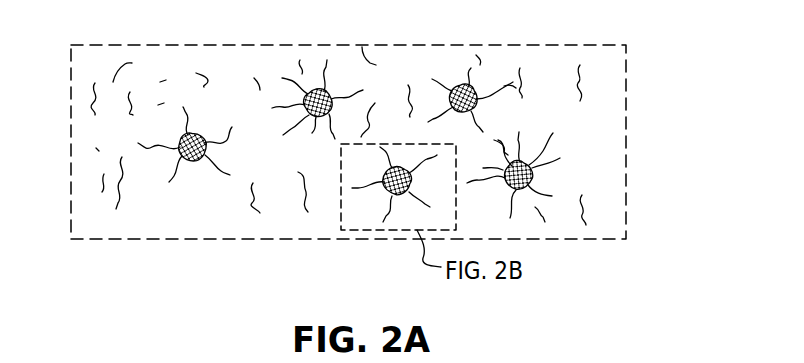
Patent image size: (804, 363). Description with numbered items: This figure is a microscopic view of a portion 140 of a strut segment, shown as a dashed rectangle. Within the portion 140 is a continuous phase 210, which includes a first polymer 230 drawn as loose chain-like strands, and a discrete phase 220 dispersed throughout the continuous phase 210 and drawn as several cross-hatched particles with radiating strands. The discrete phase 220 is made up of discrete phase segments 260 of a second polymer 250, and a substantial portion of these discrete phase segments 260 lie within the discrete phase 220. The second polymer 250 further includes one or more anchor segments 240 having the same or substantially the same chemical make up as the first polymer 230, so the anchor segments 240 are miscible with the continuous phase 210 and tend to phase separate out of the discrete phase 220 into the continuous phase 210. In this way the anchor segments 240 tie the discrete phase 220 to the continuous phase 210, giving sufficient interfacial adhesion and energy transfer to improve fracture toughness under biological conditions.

The portion 140 is at (545, 238).
The continuous phase 210 is at (113, 219).
The discrete phase 220 is at (198, 183).
The first polymer 230 is at (587, 83).
The anchor segment 240 is at (553, 133).
The second polymer 250 is at (580, 154).
The discrete phase segment 260 is at (532, 176).